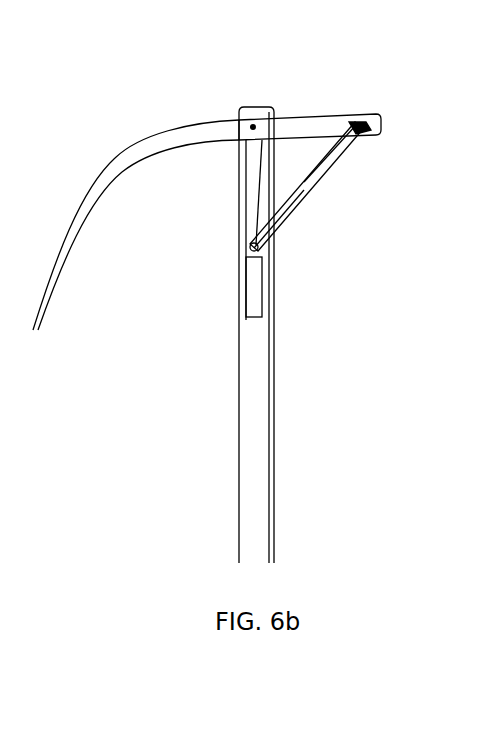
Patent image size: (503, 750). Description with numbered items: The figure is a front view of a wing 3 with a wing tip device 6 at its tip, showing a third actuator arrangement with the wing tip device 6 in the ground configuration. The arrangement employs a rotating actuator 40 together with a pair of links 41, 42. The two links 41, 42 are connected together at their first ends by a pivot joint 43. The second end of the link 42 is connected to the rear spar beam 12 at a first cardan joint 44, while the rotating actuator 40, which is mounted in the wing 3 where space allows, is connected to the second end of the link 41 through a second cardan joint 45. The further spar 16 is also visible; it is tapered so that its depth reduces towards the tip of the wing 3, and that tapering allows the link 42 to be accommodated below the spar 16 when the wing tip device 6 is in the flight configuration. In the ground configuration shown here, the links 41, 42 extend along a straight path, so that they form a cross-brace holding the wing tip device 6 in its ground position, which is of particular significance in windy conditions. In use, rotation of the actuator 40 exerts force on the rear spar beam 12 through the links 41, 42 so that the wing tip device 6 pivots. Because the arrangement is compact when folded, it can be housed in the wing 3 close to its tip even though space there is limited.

The wing 3 is at (250, 490).
The wing tip device 6 is at (110, 180).
The rear spar beam 12 is at (303, 130).
The further spar 16 is at (257, 180).
The rotating actuator 40 is at (250, 290).
The link 41 is at (327, 157).
The link 42 is at (280, 217).
The pivot joint 43 is at (308, 183).
The first cardan joint 44 is at (353, 127).
The second cardan joint 45 is at (250, 250).